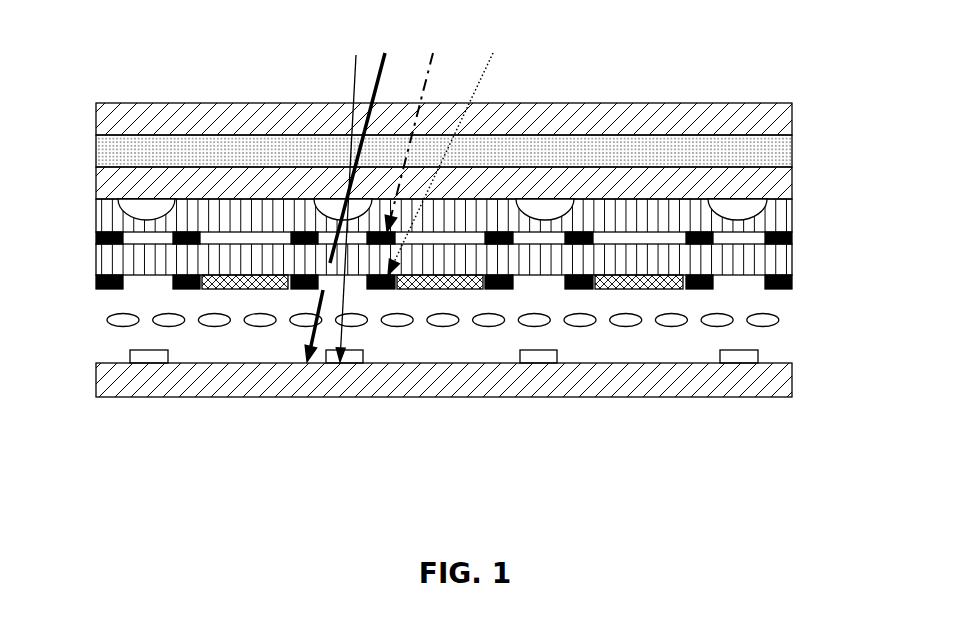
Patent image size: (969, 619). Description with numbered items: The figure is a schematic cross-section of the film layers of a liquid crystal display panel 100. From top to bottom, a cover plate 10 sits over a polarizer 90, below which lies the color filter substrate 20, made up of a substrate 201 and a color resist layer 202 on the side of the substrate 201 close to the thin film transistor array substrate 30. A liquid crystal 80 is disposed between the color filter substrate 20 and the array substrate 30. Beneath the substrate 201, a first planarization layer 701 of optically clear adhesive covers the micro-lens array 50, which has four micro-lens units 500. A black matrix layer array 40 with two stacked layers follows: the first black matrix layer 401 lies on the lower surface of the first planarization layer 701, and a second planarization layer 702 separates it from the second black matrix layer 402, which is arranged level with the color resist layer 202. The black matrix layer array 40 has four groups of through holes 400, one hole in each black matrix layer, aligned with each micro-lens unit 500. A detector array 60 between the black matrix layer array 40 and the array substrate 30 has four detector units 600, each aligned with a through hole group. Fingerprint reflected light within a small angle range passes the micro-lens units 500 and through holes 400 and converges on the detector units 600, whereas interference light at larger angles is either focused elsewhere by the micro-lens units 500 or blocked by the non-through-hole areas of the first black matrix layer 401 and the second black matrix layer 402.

The liquid crystal display panel 100 is at (445, 30).
The cover plate 10 is at (608, 103).
The polarizer 90 is at (792, 152).
The substrate 201 is at (792, 185).
The color resist layer 202 is at (642, 290).
The color filter substrate 20 is at (470, 334).
The first planarization layer 701 is at (792, 213).
The second planarization layer 702 is at (792, 260).
The first black matrix layer 401 is at (792, 238).
The second black matrix layer 402 is at (792, 282).
The through holes 400 is at (448, 268).
The black matrix layer array 40 is at (448, 363).
The micro-lens units 500 is at (152, 206).
The micro-lens array 50 is at (409, 347).
The detector units 600 is at (150, 358).
The detector array 60 is at (445, 415).
The liquid crystal 80 is at (768, 325).
The thin film transistor array substrate 30 is at (618, 397).